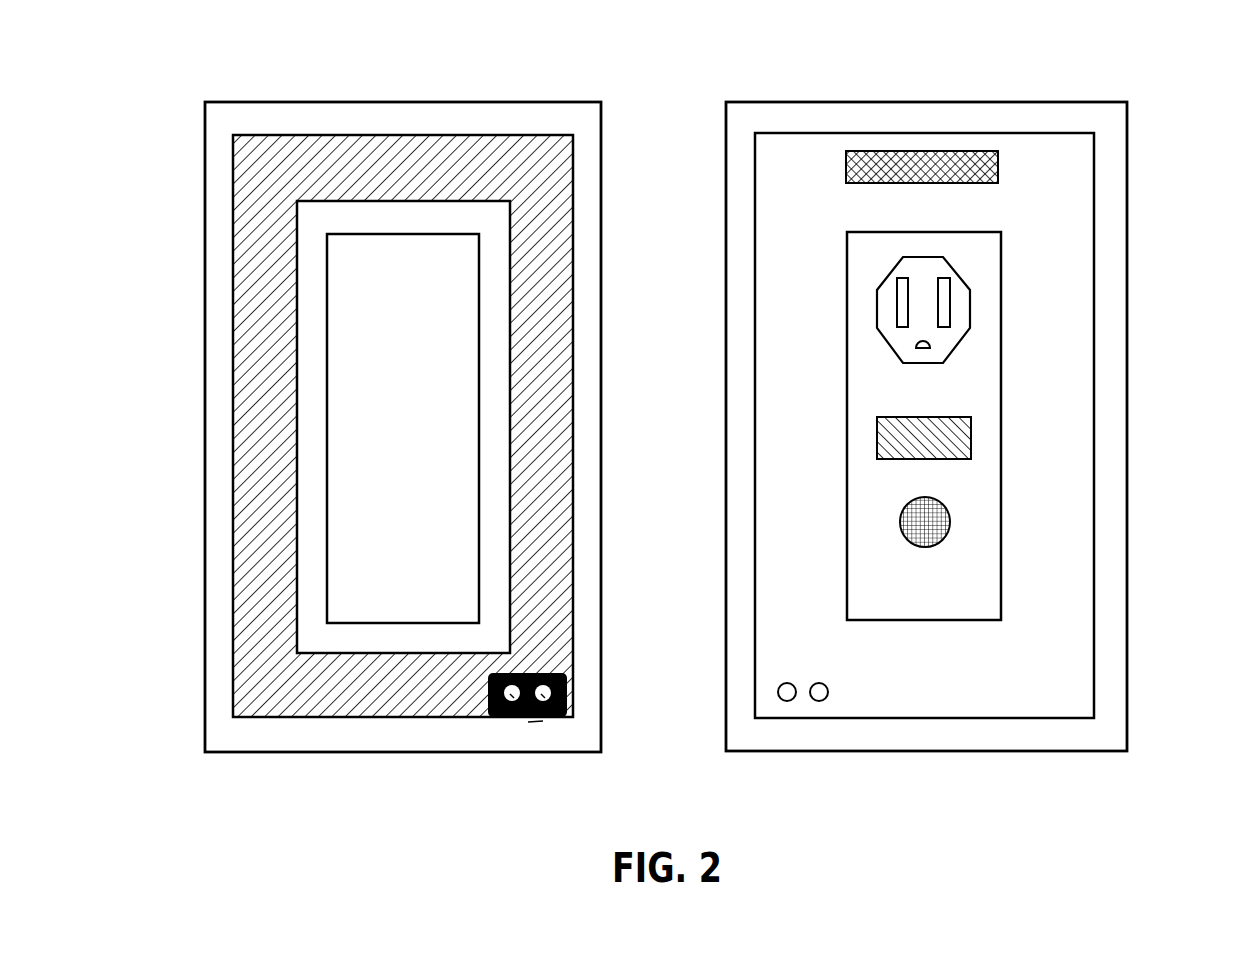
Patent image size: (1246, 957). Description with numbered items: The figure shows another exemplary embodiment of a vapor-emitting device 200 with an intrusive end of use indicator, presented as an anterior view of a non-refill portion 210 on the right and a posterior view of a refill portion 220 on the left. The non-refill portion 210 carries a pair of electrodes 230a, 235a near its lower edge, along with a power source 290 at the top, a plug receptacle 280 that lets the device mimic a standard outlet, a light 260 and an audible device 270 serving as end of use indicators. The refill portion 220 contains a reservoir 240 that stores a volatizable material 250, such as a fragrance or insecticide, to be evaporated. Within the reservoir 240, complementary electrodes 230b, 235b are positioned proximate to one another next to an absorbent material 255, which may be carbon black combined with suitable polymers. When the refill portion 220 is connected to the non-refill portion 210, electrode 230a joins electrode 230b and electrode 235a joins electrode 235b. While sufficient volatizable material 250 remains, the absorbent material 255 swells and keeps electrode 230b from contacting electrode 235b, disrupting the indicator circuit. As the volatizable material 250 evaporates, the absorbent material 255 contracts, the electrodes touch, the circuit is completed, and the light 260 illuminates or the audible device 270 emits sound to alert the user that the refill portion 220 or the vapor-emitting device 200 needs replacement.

The vapor-emitting device 200 is at (667, 422).
The non-refill portion 210 is at (915, 102).
The refill portion 220 is at (396, 102).
The electrode 230a is at (822, 700).
The electrode 230b is at (493, 710).
The electrode 235a is at (785, 700).
The electrode 235b is at (553, 718).
The reservoir 240 is at (235, 298).
The volatizable material 250 is at (260, 472).
The absorbent material 255 is at (570, 672).
The light 260 is at (955, 430).
The audible device 270 is at (932, 513).
The plug receptacle 280 is at (963, 282).
The power source 290 is at (892, 165).